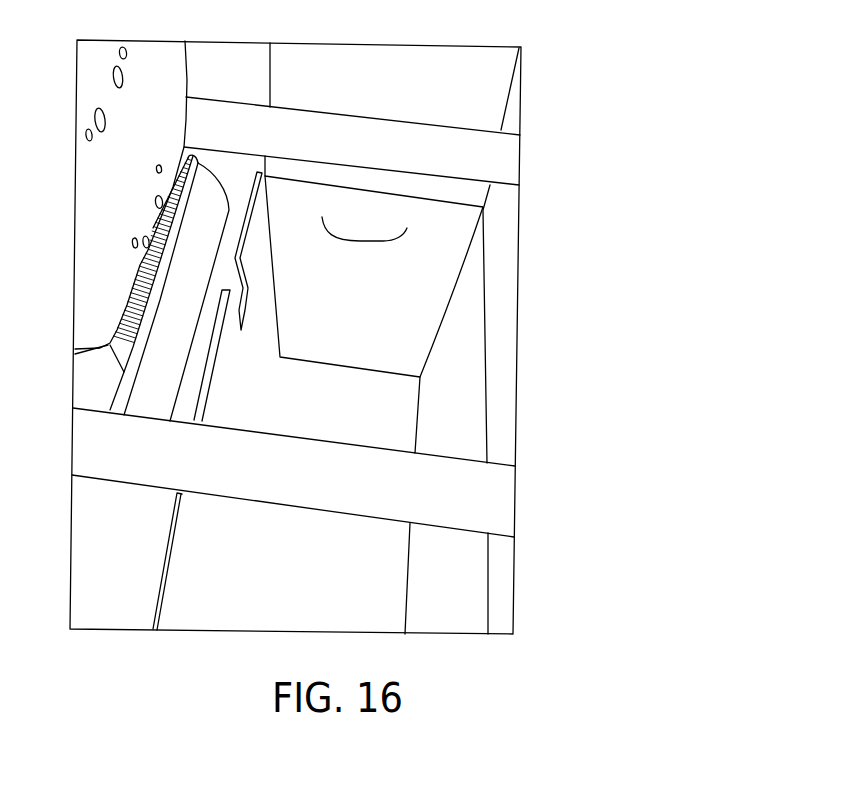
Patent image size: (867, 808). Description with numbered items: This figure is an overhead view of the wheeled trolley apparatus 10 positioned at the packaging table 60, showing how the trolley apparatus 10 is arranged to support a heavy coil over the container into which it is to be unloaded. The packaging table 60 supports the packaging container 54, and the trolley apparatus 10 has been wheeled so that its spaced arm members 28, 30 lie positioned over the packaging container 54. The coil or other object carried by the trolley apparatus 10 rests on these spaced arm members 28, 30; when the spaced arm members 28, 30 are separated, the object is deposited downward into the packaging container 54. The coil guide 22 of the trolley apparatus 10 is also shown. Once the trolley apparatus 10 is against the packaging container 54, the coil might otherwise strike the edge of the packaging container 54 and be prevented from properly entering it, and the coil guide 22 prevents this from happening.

The trolley apparatus 10 is at (132, 490).
The coil guide 22 is at (185, 330).
The spaced arm member 28 is at (500, 155).
The spaced arm member 30 is at (460, 493).
The packaging container 54 is at (407, 292).
The packaging table 60 is at (562, 391).